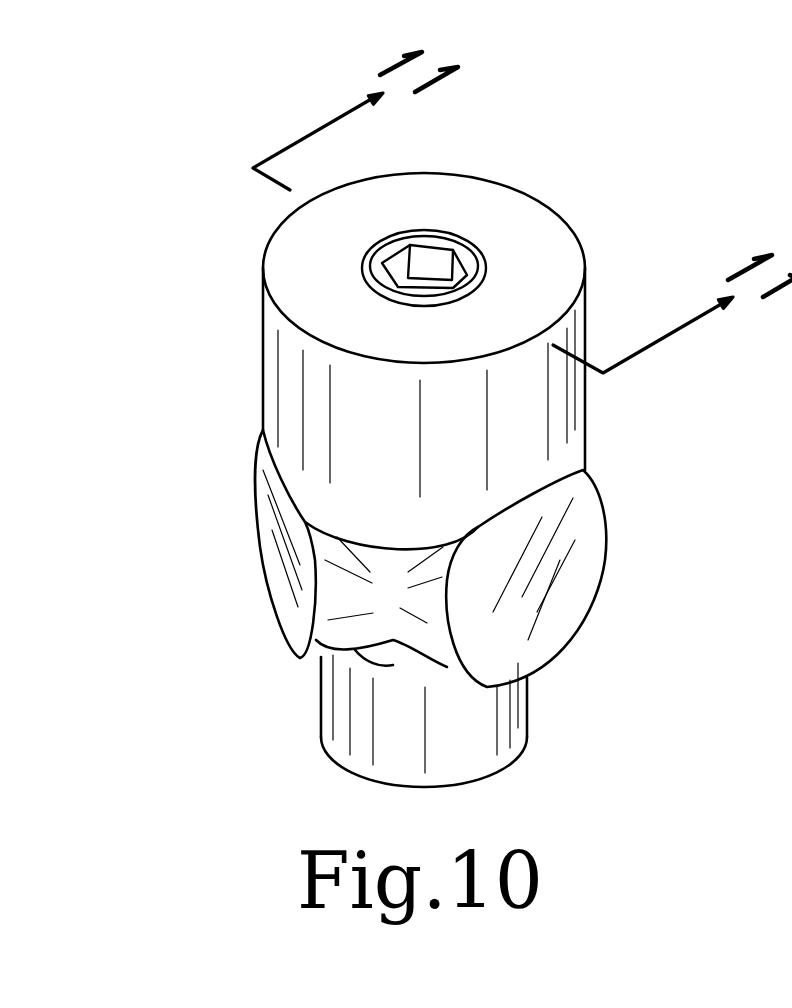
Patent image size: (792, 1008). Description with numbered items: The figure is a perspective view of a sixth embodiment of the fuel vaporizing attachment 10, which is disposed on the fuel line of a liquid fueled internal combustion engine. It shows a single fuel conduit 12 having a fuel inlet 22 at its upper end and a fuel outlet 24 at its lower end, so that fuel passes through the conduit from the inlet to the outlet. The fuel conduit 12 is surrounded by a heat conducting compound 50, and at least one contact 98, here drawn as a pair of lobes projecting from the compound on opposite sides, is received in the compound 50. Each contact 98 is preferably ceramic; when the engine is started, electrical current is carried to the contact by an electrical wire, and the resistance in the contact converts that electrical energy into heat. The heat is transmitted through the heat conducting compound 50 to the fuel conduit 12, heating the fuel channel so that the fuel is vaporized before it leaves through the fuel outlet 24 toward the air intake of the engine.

The fuel vaporizing attachment 10 is at (690, 156).
The fuel conduit 12 is at (490, 176).
The fuel inlet 22 is at (238, 256).
The fuel outlet 24 is at (560, 753).
The heat conducting compound 50 is at (585, 468).
The contact 98 is at (275, 575).